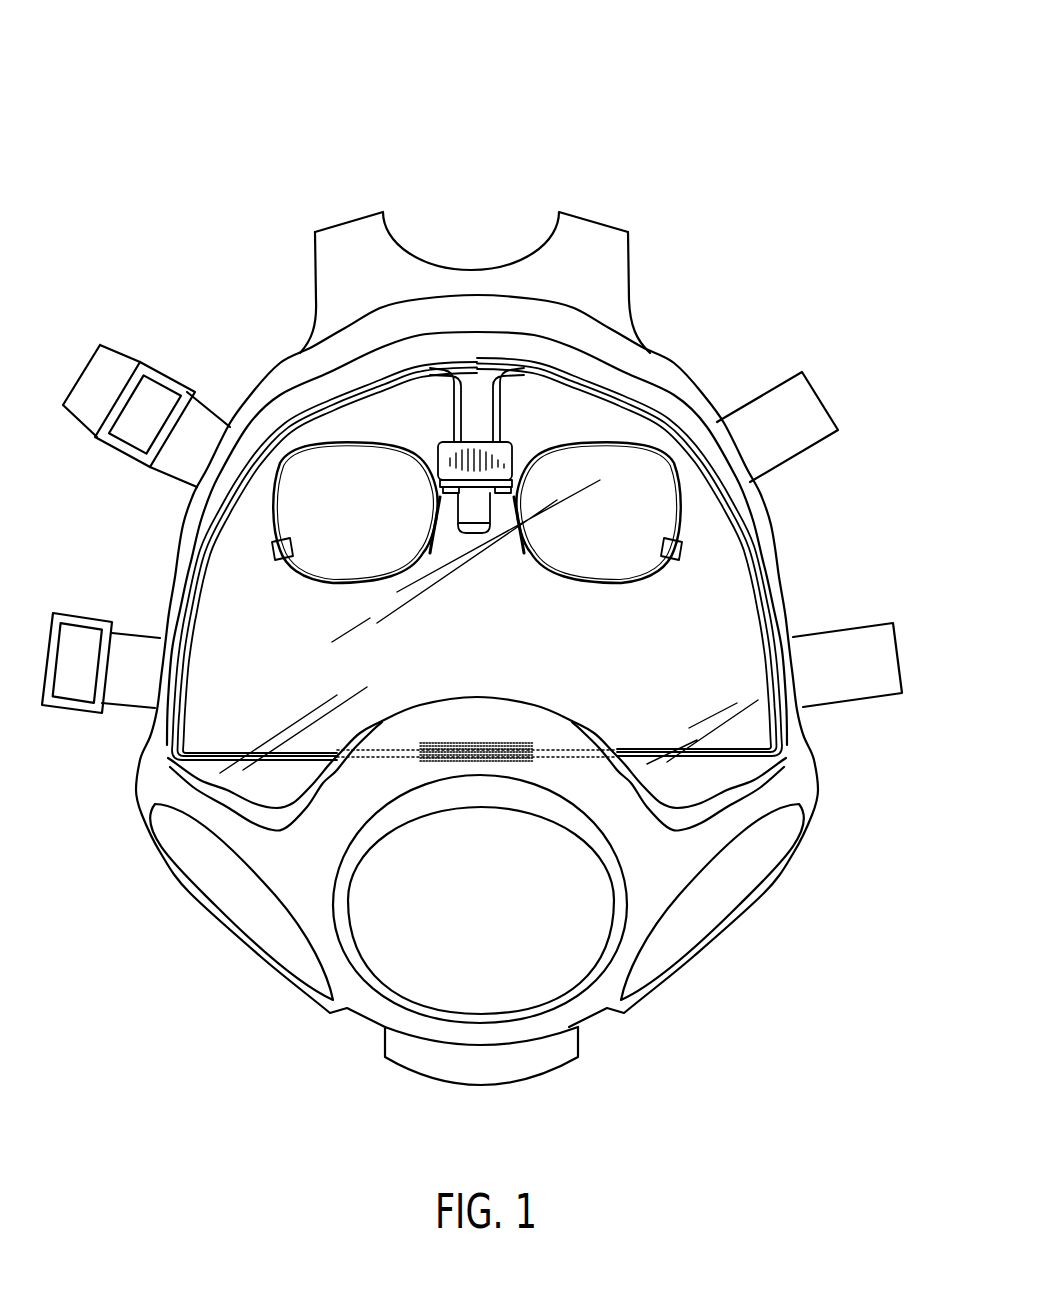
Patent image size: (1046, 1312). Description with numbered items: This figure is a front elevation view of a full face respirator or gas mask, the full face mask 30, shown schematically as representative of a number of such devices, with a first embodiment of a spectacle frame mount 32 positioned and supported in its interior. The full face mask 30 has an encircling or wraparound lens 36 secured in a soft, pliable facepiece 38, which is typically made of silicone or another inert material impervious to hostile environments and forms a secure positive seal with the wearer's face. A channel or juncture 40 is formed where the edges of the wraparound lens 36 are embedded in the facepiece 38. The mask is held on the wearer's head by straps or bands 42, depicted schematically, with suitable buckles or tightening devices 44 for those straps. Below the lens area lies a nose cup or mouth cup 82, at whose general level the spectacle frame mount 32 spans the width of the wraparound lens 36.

The full face mask 30 is at (693, 132).
The spectacle frame mount 32 is at (223, 638).
The wraparound lens 36 is at (722, 600).
The facepiece 38 is at (672, 383).
The channel or juncture 40 is at (730, 778).
The straps or bands 42 is at (598, 237).
The buckles or tightening devices 44 is at (165, 380).
The nose cup or mouth cup 82 is at (653, 862).